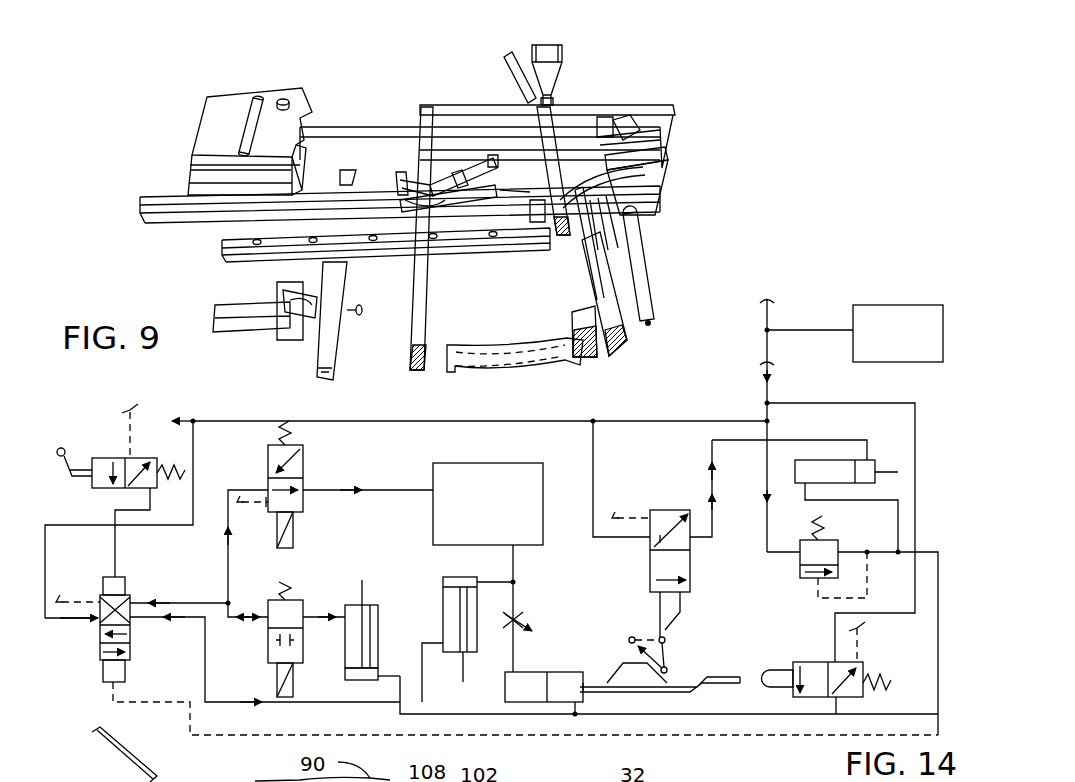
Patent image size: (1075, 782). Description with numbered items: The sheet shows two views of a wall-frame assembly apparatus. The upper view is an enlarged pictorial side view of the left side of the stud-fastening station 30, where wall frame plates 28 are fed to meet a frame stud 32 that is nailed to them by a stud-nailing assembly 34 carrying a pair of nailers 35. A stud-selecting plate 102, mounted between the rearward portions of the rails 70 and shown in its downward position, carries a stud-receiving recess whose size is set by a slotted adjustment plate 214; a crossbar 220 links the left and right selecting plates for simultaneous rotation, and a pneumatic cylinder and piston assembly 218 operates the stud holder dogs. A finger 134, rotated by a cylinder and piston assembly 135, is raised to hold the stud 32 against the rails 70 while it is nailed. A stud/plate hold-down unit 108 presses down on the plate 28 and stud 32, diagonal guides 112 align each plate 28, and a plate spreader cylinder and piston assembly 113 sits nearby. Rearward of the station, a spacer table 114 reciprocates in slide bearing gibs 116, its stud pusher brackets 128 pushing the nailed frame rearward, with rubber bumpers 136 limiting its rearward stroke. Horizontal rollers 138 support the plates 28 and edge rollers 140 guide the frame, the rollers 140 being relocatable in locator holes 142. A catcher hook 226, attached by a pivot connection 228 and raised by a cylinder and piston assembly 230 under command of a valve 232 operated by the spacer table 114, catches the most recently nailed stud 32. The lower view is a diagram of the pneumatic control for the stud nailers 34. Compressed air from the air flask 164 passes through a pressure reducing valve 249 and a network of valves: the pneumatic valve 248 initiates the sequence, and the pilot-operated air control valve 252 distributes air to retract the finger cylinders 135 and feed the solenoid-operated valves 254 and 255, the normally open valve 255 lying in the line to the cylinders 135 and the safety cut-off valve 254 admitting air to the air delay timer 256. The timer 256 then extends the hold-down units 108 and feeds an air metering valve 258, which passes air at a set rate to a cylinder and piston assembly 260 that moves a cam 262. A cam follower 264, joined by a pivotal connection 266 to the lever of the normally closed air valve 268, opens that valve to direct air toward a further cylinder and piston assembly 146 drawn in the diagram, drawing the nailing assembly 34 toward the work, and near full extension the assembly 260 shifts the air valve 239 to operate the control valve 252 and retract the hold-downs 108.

In FIG. 9, the wall frame plate 28 is at (440, 125).
In FIG. 9, the fastening station 30 is at (522, 98).
In FIG. 9, the frame stud 32 is at (410, 342).
In FIG. 9, the stud-nailing assembly 34 is at (570, 64).
In FIG. 9, the nailer 35 is at (552, 96).
In FIG. 9, the rail 70 is at (645, 152).
In FIG. 9, the stud-selecting plate 102 is at (628, 196).
In FIG. 14, the stud/plate hold-down unit 108 is at (443, 605).
In FIG. 9, the diagonal guide 112 is at (632, 122).
In FIG. 9, the plate spreader cylinder and piston assembly 113 is at (613, 124).
In FIG. 9, the spacer table 114 is at (481, 342).
In FIG. 9, the slide bearing gib 116 is at (223, 263).
In FIG. 9, the stud pusher bracket 128 is at (580, 263).
In FIG. 9, the finger 134 is at (543, 222).
In FIG. 9, the finger-operating cylinder and piston assembly 135 is at (482, 215).
In FIG. 14, the finger-operating cylinder and piston assembly 135 is at (345, 645).
In FIG. 9, the rubber bumper 136 is at (301, 312).
In FIG. 9, the horizontal roller 138 is at (247, 125).
In FIG. 9, the edge roller 140 is at (285, 99).
In FIG. 9, the locator hole 142 is at (273, 141).
In FIG. 14, the air cylinder 146 is at (877, 463).
In FIG. 14, the air flask 164 is at (872, 305).
In FIG. 9, the slotted adjustment plate 214 is at (647, 170).
In FIG. 9, the stud holder dog operating cylinder and piston assembly 218 is at (586, 218).
In FIG. 9, the crossbar 220 is at (622, 327).
In FIG. 9, the catcher hook 226 is at (412, 175).
In FIG. 9, the pivot connection 228 is at (490, 158).
In FIG. 9, the catcher hook cylinder and piston assembly 230 is at (432, 198).
In FIG. 9, the valve 232 is at (363, 266).
In FIG. 14, the air valve 239 is at (812, 697).
In FIG. 14, the pneumatic valve 248 is at (100, 455).
In FIG. 14, the pressure reducing valve 249 is at (808, 578).
In FIG. 14, the pilot-operated air control valve 252 is at (130, 601).
In FIG. 14, the solenoid-operated air cut-off valve 254 is at (268, 462).
In FIG. 14, the solenoid-operated valve 255 is at (268, 645).
In FIG. 14, the air delay timer 256 is at (538, 548).
In FIG. 14, the air metering valve 258 is at (521, 613).
In FIG. 14, the pneumatic cylinder and piston assembly 260 is at (565, 672).
In FIG. 14, the cam 262 is at (620, 663).
In FIG. 14, the cam follower 264 is at (667, 668).
In FIG. 14, the pivotal connection 266 is at (668, 640).
In FIG. 14, the air valve 268 is at (690, 572).